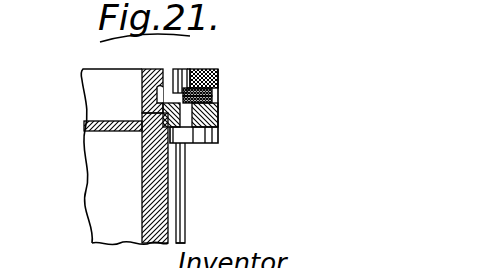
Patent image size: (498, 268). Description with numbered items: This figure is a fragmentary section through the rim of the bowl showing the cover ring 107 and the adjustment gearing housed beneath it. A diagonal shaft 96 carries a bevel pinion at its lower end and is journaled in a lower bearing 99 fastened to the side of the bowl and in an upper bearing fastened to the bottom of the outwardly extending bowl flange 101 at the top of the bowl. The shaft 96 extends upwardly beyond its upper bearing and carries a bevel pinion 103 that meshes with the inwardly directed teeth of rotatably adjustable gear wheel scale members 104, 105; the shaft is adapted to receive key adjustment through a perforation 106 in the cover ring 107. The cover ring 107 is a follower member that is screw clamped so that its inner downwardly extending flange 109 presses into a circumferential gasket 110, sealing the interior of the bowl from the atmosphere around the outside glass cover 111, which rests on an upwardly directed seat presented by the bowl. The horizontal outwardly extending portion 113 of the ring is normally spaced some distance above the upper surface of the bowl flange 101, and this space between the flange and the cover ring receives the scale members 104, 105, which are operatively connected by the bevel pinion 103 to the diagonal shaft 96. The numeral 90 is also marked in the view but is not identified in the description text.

The rod 90 is at (160, 210).
The diagonal shaft 96 is at (185, 183).
The lower bearing 99 is at (193, 143).
The bowl flange 101 is at (220, 117).
The bevel pinion 103 is at (162, 73).
The scale member 104 is at (212, 86).
The scale member 105 is at (212, 101).
The perforation 106 is at (182, 66).
The cover ring 107 is at (205, 68).
The inner downwardly extending flange 109 is at (137, 93).
The circumferential gasket 110 is at (143, 134).
The glass cover 111 is at (85, 128).
The horizontal outwardly extending portion 113 is at (148, 165).